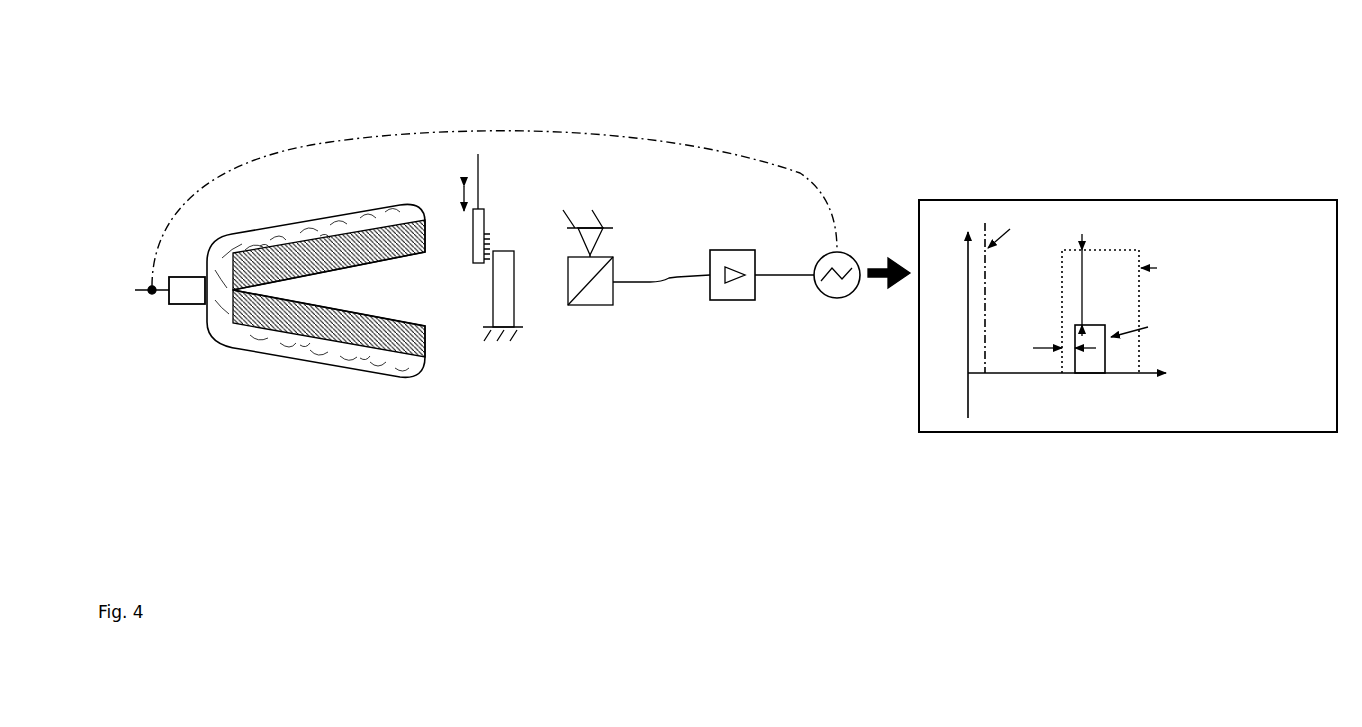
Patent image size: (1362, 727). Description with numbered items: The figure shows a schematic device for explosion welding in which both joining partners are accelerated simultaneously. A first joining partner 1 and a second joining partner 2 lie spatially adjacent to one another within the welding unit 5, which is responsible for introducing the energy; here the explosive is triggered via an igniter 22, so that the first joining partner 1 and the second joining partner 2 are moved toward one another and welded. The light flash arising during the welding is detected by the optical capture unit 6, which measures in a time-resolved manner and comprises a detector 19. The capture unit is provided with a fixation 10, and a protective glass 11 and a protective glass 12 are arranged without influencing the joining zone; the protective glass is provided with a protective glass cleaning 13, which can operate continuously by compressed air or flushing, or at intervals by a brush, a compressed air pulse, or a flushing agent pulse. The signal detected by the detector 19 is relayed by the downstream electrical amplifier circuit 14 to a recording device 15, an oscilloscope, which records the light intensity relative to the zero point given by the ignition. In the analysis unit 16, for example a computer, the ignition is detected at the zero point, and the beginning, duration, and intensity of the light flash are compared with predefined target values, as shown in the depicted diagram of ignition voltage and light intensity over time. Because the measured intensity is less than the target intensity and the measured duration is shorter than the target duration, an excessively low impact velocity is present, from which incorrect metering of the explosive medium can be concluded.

The first joining partner 1 is at (357, 253).
The second joining partner 2 is at (357, 328).
The welding unit 5 is at (256, 338).
The optical capture unit 6 is at (599, 226).
The fixation 10 is at (584, 226).
The protective glass 11 is at (506, 273).
The protective glass 12 is at (496, 342).
The protective glass cleaning 13 is at (467, 230).
The electrical amplifier circuit 14 is at (732, 251).
The recording device 15 is at (851, 254).
The analysis unit 16 is at (949, 199).
The detector 19 is at (592, 308).
The igniter 22 is at (186, 292).